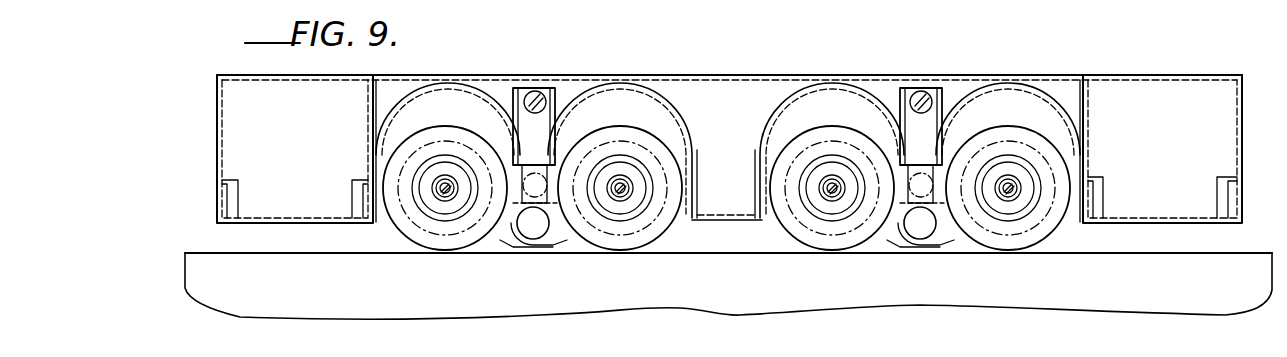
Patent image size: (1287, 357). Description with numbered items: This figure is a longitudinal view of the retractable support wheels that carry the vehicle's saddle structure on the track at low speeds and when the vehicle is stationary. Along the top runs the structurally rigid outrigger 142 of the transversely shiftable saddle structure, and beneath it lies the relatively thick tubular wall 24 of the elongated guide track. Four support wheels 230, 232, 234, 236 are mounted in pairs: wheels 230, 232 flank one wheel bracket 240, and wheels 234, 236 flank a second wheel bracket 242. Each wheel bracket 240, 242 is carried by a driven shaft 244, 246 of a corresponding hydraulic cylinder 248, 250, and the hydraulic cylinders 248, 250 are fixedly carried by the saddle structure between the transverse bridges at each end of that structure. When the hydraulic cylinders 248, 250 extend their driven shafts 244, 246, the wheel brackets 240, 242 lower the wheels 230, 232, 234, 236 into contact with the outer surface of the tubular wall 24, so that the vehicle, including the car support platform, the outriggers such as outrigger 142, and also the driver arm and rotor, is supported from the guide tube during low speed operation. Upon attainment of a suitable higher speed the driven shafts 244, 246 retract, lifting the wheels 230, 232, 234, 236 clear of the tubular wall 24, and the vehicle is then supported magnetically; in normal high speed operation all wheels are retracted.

The tubular wall 24 is at (203, 253).
The outrigger 142 is at (735, 66).
The wheel 230 is at (432, 251).
The wheel 232 is at (645, 250).
The wheel 234 is at (815, 250).
The wheel 236 is at (1024, 250).
The wheel bracket 240 is at (519, 244).
The wheel bracket 242 is at (895, 246).
The driven shaft 244 is at (546, 243).
The driven shaft 246 is at (936, 250).
The hydraulic cylinder 248 is at (557, 94).
The hydraulic cylinder 250 is at (942, 121).